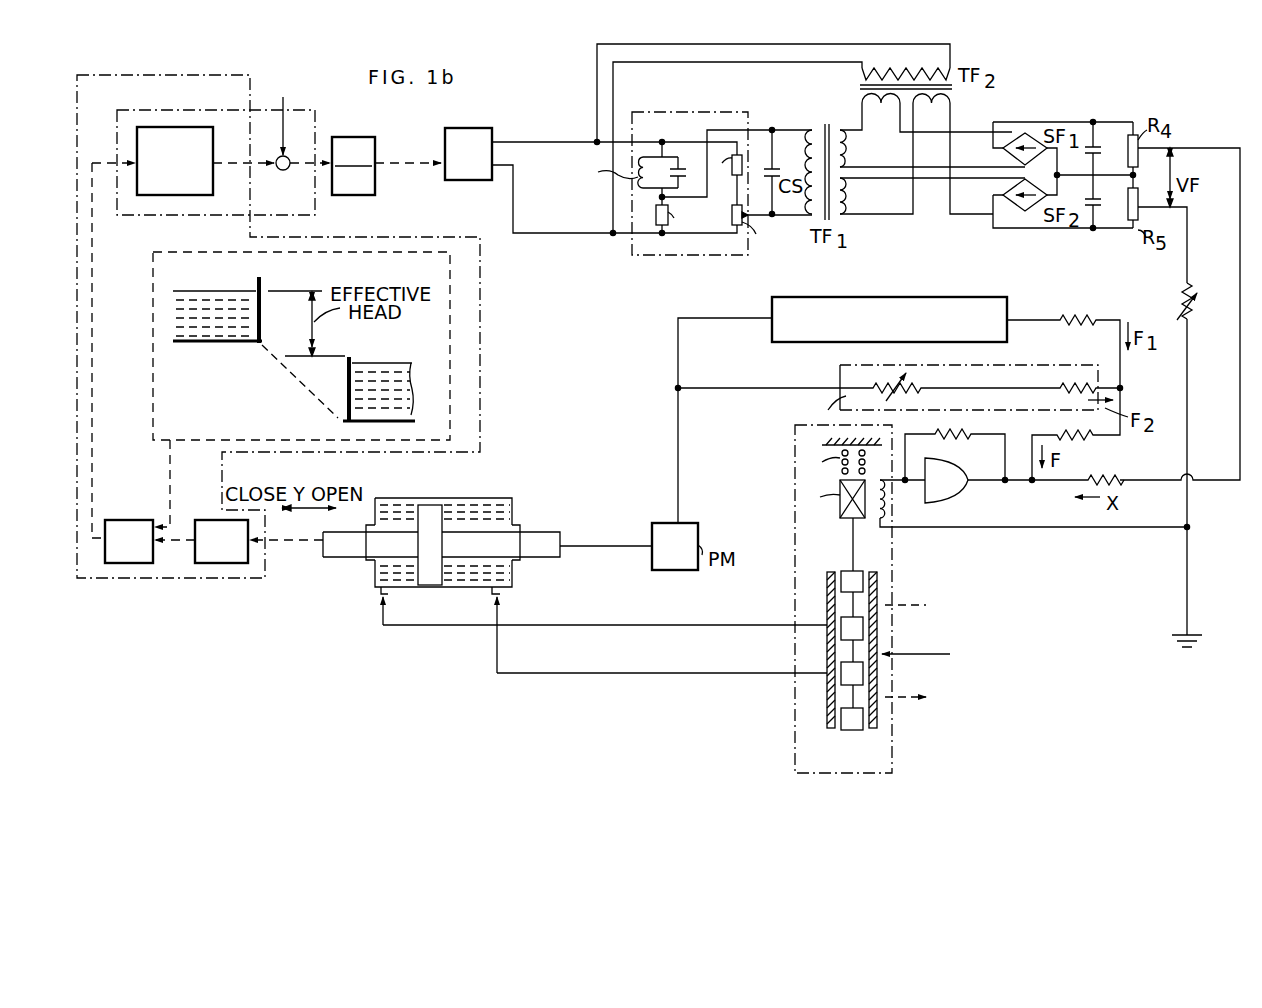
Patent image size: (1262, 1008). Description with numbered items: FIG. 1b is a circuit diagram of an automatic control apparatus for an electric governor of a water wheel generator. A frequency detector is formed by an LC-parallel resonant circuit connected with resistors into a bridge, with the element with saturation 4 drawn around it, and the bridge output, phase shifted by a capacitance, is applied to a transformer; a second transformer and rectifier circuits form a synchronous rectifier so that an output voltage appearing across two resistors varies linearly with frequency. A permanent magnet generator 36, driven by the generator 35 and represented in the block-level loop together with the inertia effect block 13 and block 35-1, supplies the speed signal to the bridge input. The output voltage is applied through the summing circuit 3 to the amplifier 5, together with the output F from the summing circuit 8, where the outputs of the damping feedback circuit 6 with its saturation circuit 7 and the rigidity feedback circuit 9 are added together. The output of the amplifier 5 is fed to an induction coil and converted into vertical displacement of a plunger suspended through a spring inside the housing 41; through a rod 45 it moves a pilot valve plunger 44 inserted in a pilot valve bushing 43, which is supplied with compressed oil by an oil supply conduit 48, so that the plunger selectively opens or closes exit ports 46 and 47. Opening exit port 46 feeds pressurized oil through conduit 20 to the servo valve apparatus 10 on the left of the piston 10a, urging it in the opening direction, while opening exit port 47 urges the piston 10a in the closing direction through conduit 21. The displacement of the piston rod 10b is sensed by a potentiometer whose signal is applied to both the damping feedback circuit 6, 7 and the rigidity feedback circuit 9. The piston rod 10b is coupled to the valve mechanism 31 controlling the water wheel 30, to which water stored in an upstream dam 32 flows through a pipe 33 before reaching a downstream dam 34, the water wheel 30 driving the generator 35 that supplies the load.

The summing circuit 3 is at (1076, 494).
The element with saturation 4 is at (713, 255).
The amplifier 5 is at (962, 489).
The damping feedback circuit 6 is at (889, 308).
The saturation circuit 7 is at (932, 304).
The summing circuit 8 is at (1122, 388).
The rigidity feedback circuit 9 is at (835, 378).
The servo valve apparatus 10 is at (448, 523).
The piston 10a is at (430, 512).
The piston rod 10b is at (530, 532).
The inertia effect block 13 is at (345, 137).
The conduit 20 is at (573, 625).
The conduit 21 is at (573, 673).
The water wheel 30 is at (239, 541).
The valve mechanism 31 is at (137, 501).
The upstream dam 32 is at (256, 279).
The pipe 33 is at (264, 351).
The downstream dam 34 is at (420, 362).
The generator 35 is at (209, 300).
The setpoint unit 35-1 is at (175, 161).
The permanent magnet generator 36 is at (436, 152).
The sensor housing 41 is at (966, 599).
The pilot valve bushing 43 is at (877, 588).
The pilot valve plunger 44 is at (860, 675).
The rod 45 is at (850, 560).
The exit port 46 is at (827, 628).
The exit port 47 is at (827, 677).
The oil supply conduit 48 is at (932, 648).